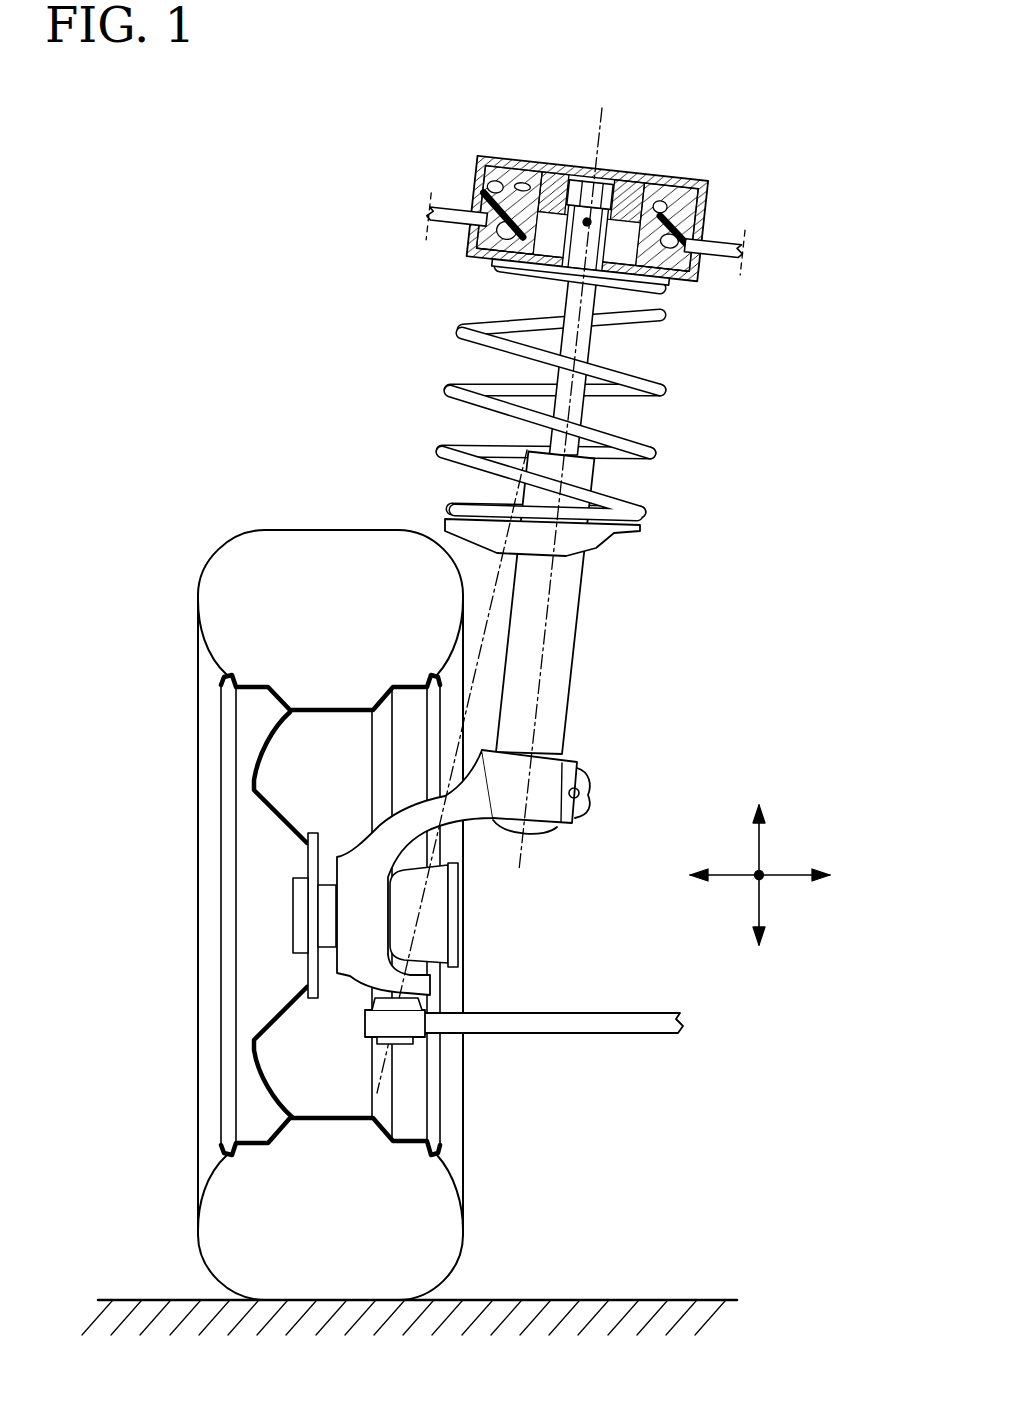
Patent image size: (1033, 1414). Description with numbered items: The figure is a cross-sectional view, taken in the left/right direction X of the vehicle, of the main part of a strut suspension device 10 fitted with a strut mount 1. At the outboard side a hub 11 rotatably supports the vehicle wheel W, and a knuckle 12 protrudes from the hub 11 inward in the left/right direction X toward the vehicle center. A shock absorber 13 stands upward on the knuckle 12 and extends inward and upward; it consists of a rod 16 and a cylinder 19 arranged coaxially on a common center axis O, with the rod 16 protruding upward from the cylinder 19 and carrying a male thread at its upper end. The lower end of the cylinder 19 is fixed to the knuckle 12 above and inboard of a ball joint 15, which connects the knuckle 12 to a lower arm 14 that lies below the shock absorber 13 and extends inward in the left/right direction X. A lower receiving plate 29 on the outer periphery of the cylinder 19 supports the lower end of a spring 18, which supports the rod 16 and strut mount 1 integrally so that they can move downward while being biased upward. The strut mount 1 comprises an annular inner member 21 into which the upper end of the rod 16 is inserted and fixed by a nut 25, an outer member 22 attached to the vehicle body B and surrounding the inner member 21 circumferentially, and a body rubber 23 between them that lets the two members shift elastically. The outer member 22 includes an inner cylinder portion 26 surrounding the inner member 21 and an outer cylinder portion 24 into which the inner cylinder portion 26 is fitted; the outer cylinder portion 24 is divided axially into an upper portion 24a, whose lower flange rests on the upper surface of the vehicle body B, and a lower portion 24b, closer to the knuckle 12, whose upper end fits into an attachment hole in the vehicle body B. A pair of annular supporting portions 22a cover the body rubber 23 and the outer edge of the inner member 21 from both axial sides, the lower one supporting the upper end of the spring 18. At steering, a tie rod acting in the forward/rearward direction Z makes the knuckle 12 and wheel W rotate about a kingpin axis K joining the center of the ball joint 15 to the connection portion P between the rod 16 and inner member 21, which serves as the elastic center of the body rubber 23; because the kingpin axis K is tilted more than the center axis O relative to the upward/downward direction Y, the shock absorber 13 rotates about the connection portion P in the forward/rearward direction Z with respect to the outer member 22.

The strut suspension device 10 is at (212, 232).
The strut mount 1 is at (816, 92).
The outer member 22 is at (588, 218).
The supporting portions 22a is at (505, 160).
The body rubber 23 is at (588, 223).
The inner member 21 is at (588, 219).
The outer cylinder portion 24 is at (584, 234).
The upper portion 24a is at (456, 219).
The lower portion 24b is at (714, 249).
The nut 25 is at (590, 195).
The inner cylinder portion 26 is at (582, 267).
The shock absorber 13 is at (776, 423).
The rod 16 is at (580, 412).
The cylinder 19 is at (587, 478).
The spring 18 is at (660, 394).
The lower receiving plate 29 is at (627, 527).
The knuckle 12 is at (413, 798).
The hub 11 is at (313, 973).
The ball joint 15 is at (363, 1022).
The lower arm 14 is at (580, 1032).
The vehicle wheel W is at (290, 530).
The kingpin axis K is at (500, 570).
The center axis O is at (545, 635).
The connection portion P is at (587, 222).
The vehicle body B is at (443, 236).
The left/right direction X is at (771, 875).
The upward/downward direction Y is at (758, 858).
The forward/rearward direction Z is at (762, 878).